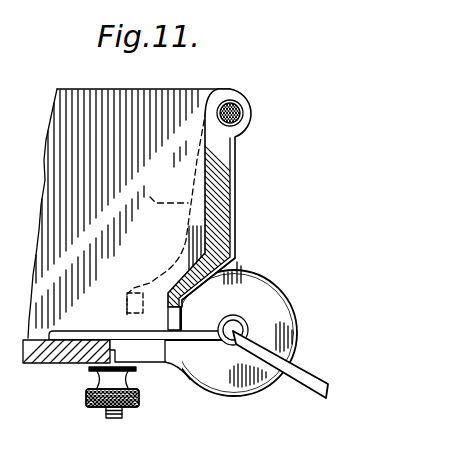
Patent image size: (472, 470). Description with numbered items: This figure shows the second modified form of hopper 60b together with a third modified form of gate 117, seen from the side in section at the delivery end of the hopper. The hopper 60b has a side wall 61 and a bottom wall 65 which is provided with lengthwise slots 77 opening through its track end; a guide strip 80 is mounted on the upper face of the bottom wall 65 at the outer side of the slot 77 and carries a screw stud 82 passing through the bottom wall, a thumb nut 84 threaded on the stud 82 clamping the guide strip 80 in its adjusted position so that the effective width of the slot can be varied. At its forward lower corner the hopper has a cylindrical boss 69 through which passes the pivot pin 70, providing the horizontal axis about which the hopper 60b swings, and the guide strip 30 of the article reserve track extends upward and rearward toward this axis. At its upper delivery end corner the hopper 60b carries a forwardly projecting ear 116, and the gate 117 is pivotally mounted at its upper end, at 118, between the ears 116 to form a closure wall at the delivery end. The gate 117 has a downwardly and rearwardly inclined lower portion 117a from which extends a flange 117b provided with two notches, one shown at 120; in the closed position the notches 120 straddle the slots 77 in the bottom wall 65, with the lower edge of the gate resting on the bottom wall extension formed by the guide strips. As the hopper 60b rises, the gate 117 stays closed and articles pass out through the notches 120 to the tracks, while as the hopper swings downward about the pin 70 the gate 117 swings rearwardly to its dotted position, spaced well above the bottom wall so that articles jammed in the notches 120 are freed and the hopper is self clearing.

The hopper 60b is at (87, 87).
The side wall 61 is at (62, 137).
The gate 117 is at (207, 189).
The lower portion of gate 117a is at (177, 271).
The flange 117b is at (183, 305).
The pivot 118 is at (255, 116).
The ears 116 is at (236, 141).
The notch 120 is at (127, 293).
The boss 69 is at (275, 304).
The pivot pin 70 is at (248, 335).
The guide strip 80 is at (74, 318).
The bottom wall 65 is at (53, 364).
The slot 77 is at (143, 358).
The thumb nut 84 is at (97, 407).
The screw stud 82 is at (113, 419).
The guide strip 30 is at (300, 377).